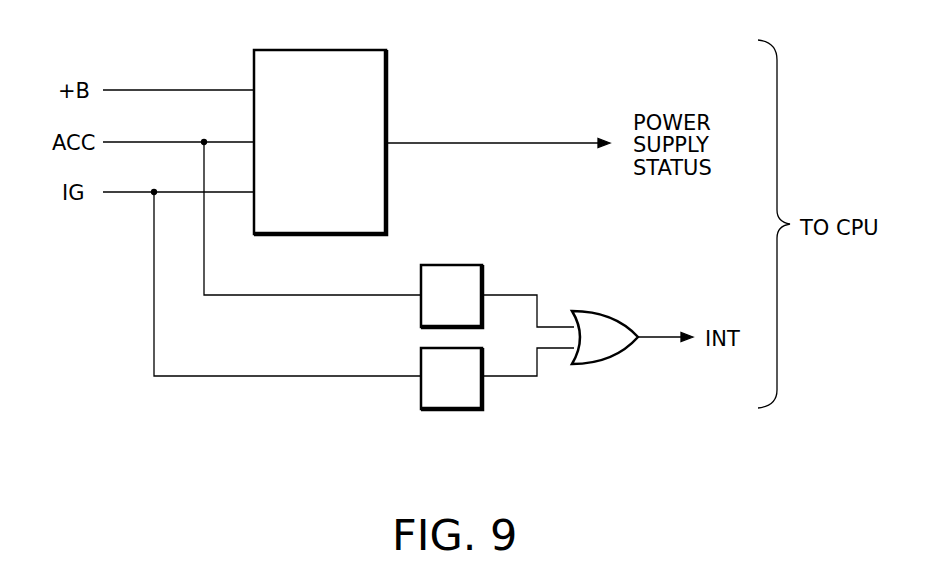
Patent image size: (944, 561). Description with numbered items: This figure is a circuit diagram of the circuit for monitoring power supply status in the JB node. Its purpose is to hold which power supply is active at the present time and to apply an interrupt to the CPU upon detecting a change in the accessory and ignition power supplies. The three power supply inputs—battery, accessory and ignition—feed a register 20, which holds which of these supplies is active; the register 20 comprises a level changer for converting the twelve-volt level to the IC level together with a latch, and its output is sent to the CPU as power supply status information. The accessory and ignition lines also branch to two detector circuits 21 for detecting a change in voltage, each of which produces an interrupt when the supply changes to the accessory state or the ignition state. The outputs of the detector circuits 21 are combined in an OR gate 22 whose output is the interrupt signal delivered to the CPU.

The register 20 is at (386, 85).
The detector circuit 21 is at (482, 280).
The OR gate 22 is at (623, 318).